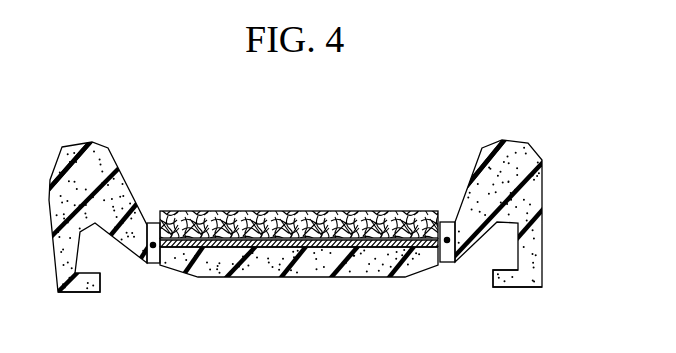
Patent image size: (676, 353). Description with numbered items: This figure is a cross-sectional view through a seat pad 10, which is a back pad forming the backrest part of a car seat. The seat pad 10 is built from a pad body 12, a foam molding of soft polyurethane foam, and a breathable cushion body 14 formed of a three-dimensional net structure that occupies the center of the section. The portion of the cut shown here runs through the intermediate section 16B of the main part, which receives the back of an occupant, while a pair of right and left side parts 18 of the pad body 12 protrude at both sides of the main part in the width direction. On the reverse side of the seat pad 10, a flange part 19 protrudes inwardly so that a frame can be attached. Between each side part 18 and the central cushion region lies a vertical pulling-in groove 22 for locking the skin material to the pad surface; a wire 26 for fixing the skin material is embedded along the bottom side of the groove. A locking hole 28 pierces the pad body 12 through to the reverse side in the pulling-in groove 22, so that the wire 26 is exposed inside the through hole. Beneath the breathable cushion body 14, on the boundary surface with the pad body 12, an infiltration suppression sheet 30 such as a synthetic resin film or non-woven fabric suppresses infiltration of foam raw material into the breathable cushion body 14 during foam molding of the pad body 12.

The seat pad 10 is at (310, 111).
The pad body 12 is at (530, 143).
The breathable cushion body 14 is at (323, 232).
The intermediate section 16B is at (245, 211).
The side part 18 is at (100, 142).
The flange part 19 is at (510, 287).
The vertical pulling-in groove 22 is at (148, 222).
The wire 26 is at (142, 255).
The locking hole 28 is at (155, 263).
The infiltration suppression sheet 30 is at (322, 252).